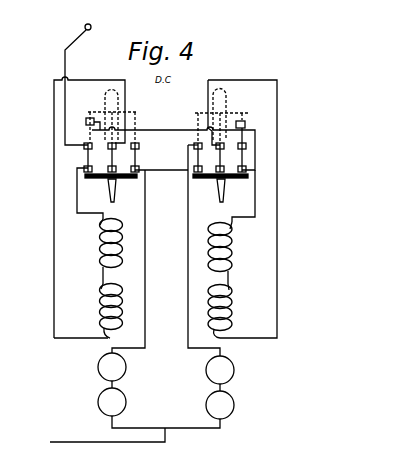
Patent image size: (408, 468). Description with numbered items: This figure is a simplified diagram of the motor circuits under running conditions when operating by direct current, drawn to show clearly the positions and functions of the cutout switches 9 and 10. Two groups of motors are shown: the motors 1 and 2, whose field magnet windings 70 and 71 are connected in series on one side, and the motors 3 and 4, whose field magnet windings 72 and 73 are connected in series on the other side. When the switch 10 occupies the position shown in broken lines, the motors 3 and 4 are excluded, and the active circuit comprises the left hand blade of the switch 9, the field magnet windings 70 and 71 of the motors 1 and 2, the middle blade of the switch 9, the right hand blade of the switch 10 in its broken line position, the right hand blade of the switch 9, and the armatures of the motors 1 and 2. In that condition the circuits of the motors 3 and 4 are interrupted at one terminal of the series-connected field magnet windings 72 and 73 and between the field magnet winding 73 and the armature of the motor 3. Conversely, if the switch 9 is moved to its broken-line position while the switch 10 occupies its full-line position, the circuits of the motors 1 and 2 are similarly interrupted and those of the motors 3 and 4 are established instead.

The motor 1 is at (97, 365).
The motor 2 is at (97, 401).
The motor 3 is at (234, 370).
The motor 4 is at (234, 404).
The cutout switch 9 is at (111, 148).
The cutout switch 10 is at (220, 148).
The field magnet winding 70 is at (101, 244).
The field magnet winding 71 is at (101, 302).
The field magnet winding 72 is at (207, 245).
The field magnet winding 73 is at (207, 301).